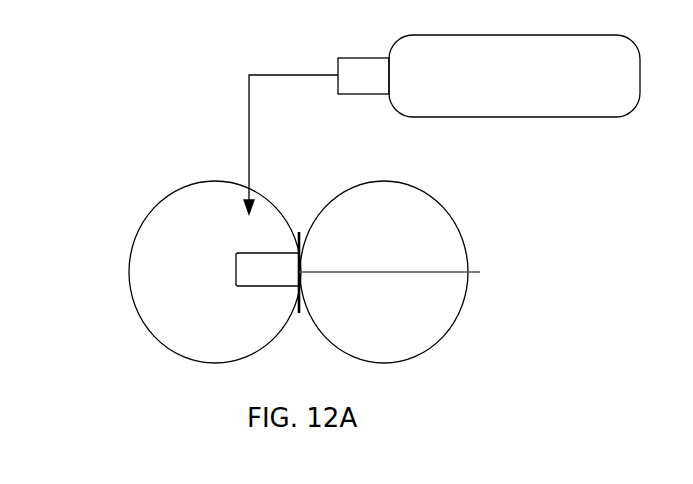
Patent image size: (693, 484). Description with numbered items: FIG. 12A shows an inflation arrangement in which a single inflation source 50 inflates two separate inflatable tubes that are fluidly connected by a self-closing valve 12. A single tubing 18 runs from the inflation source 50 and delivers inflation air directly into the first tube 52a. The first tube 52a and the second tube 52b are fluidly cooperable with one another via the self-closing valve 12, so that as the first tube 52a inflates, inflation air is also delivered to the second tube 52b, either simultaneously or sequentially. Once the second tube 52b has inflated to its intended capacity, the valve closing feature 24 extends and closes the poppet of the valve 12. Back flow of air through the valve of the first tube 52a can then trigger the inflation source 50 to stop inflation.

The self-closing valve 12 is at (262, 262).
The tubing 18 is at (249, 117).
The valve closing feature 24 is at (377, 271).
The inflation source 50 is at (489, 76).
The first tube 52a is at (180, 323).
The second tube 52b is at (416, 329).